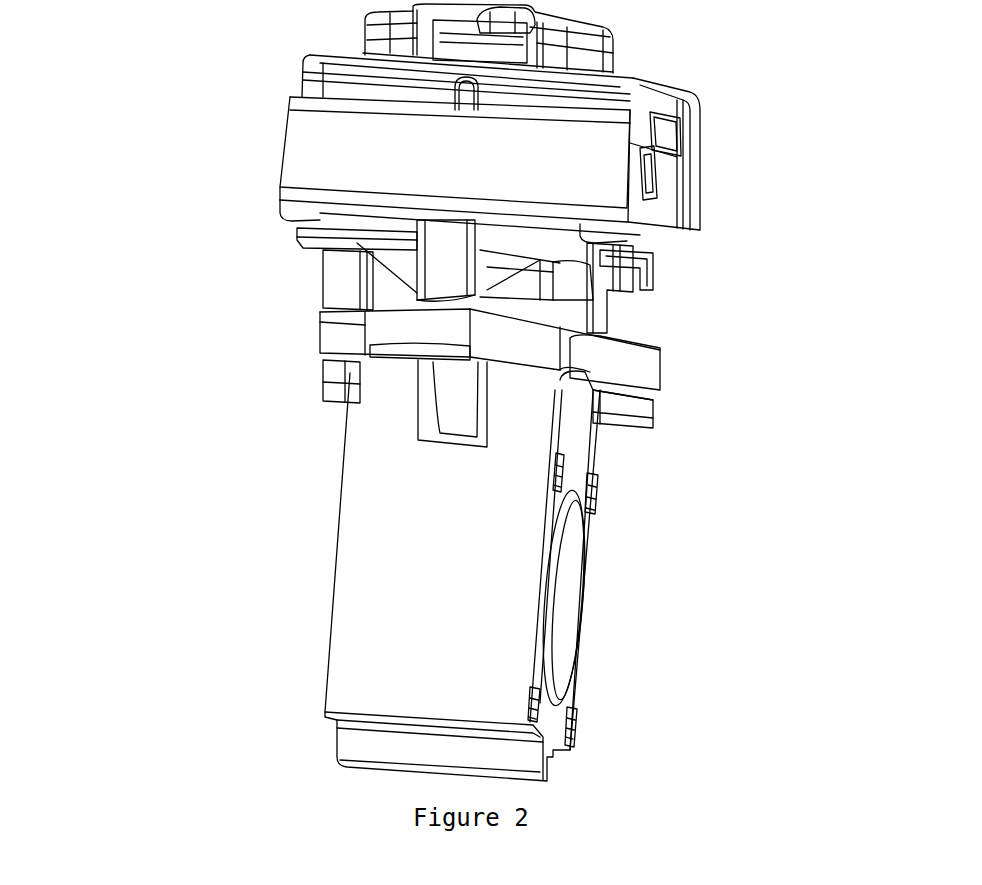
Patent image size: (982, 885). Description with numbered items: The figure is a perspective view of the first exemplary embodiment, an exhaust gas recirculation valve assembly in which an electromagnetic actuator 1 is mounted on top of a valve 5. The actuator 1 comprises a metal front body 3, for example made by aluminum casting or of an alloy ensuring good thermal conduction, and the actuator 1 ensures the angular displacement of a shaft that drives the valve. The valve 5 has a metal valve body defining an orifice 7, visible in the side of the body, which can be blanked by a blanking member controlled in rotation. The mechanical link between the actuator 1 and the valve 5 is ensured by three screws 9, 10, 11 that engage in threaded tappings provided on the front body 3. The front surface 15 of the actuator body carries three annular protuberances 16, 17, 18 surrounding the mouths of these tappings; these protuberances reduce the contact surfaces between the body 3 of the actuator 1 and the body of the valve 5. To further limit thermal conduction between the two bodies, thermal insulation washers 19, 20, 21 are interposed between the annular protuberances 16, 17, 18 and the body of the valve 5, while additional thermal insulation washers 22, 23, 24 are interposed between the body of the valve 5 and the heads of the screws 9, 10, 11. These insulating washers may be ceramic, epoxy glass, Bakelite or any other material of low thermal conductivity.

The electromagnetic actuator 1 is at (704, 185).
The metal front body 3 is at (670, 242).
The valve 5 is at (296, 678).
The orifice 7 is at (570, 590).
The screw 9 is at (641, 410).
The screw 10 is at (430, 377).
The screw 11 is at (342, 389).
The front surface 15 is at (310, 254).
The annular protuberance 16 is at (660, 296).
The annular protuberance 17 is at (430, 270).
The annular protuberance 18 is at (353, 296).
The thermal insulation washer 19 is at (340, 316).
The thermal insulation washer 20 is at (470, 307).
The thermal insulation washer 21 is at (647, 340).
The thermal insulation washer 22 is at (340, 364).
The thermal insulation washer 23 is at (430, 352).
The thermal insulation washer 24 is at (650, 387).